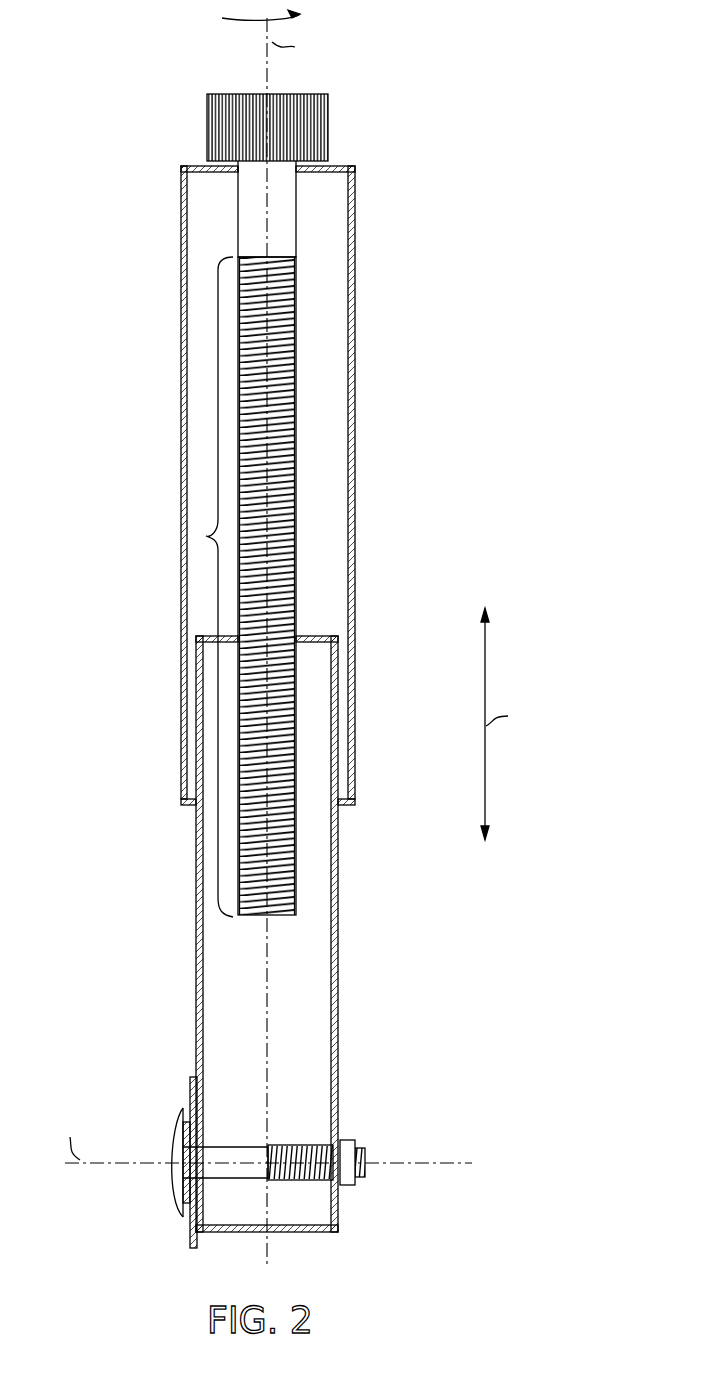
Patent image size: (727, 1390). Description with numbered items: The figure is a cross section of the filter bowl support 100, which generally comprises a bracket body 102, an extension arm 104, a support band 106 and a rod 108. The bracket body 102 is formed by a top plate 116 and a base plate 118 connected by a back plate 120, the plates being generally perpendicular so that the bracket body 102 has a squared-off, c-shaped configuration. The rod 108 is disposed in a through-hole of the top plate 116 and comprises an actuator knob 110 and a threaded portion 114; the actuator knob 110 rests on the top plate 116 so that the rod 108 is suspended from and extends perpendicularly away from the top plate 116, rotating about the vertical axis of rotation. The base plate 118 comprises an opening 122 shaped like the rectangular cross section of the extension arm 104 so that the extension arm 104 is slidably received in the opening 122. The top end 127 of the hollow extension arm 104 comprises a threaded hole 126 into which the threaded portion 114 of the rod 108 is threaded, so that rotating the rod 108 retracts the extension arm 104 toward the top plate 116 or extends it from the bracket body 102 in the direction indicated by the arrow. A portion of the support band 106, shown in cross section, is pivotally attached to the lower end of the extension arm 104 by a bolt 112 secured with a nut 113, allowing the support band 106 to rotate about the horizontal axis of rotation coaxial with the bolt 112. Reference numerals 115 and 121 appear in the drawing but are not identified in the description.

The filter bowl support 100 is at (470, 97).
The bracket body 102 is at (442, 302).
The extension arm 104 is at (338, 965).
The support band 106 is at (190, 1090).
The rod 108 is at (297, 212).
The actuator knob 110 is at (327, 97).
The bolt 112 is at (168, 1170).
The nut 113 is at (348, 1140).
The threaded portion 114 is at (206, 536).
The opening 115 is at (238, 168).
The top plate 116 is at (338, 165).
The base plate 118 is at (185, 808).
The back plate 120 is at (355, 367).
The side wall 121 is at (181, 365).
The opening 122 is at (343, 808).
The threaded hole 126 is at (297, 636).
The top end 127 is at (325, 633).